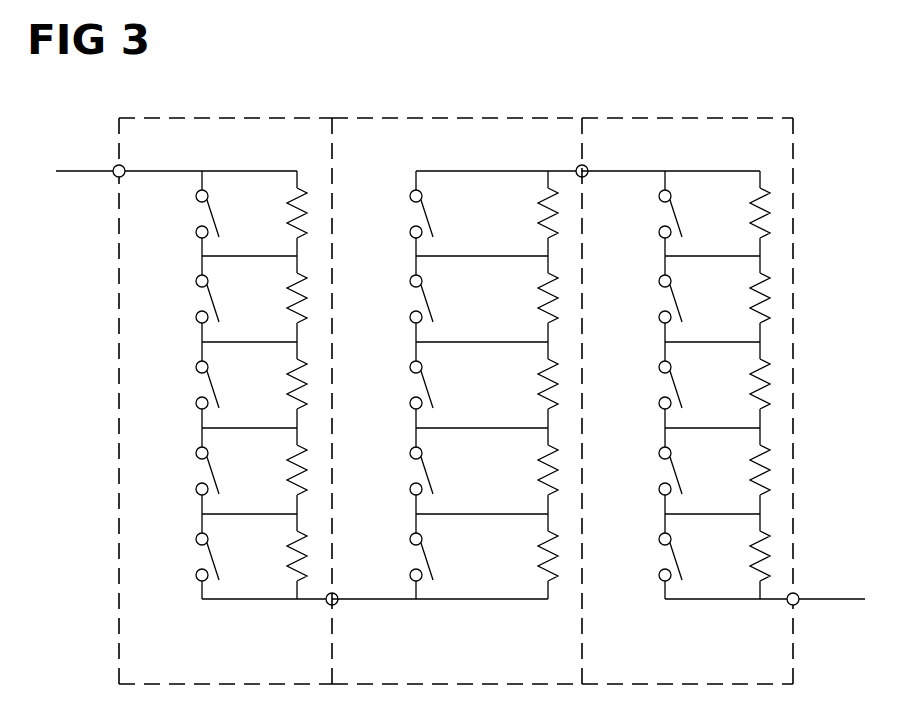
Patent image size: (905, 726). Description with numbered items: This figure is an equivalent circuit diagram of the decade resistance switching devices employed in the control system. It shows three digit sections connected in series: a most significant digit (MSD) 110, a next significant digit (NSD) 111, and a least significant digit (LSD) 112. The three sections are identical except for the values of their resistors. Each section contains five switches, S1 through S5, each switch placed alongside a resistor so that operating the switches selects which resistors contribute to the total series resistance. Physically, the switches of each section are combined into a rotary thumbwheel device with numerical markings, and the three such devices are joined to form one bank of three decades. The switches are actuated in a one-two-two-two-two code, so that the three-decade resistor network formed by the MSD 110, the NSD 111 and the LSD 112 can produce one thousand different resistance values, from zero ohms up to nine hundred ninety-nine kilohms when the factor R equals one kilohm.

The most significant digit (MSD) 110 is at (265, 106).
The next significant digit (NSD) 111 is at (495, 108).
The least significant digit (LSD) 112 is at (715, 112).